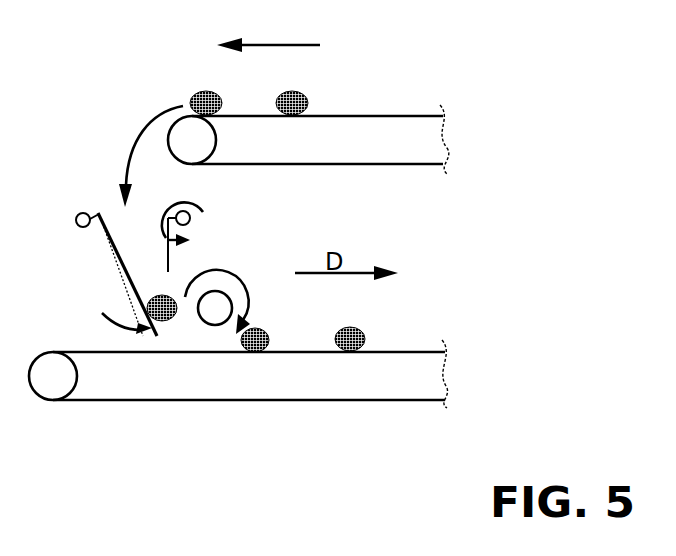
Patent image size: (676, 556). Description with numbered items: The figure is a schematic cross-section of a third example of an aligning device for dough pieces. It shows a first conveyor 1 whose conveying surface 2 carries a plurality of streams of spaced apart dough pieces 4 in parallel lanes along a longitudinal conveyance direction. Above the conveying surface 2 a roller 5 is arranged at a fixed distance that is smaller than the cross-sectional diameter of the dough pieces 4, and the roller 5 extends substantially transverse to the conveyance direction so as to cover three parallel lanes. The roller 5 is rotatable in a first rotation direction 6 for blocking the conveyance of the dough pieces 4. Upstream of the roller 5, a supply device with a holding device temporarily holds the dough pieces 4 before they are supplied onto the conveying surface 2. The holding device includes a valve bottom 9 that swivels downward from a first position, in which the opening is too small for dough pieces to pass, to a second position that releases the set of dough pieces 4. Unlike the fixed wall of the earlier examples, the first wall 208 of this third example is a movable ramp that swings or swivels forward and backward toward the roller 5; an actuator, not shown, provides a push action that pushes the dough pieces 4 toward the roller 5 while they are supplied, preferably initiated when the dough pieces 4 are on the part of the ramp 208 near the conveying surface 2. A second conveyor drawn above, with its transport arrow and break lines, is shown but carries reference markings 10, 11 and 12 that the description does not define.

The first conveyor 1 is at (320, 382).
The conveying surface 2 is at (405, 352).
The dough pieces 4 is at (288, 93).
The roller 5 is at (222, 308).
The first rotation direction 6 is at (250, 293).
The valve bottom 9 is at (168, 253).
The upper conveyor transport direction 10 is at (268, 32).
The upper conveyor belt 11 is at (428, 142).
The upper belt surface 12 is at (400, 116).
The first wall 208 is at (128, 282).